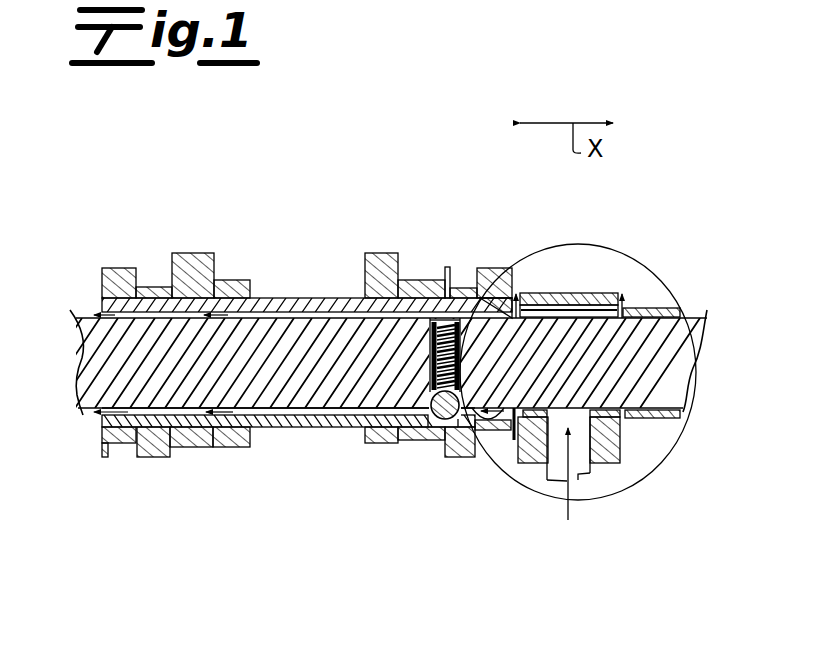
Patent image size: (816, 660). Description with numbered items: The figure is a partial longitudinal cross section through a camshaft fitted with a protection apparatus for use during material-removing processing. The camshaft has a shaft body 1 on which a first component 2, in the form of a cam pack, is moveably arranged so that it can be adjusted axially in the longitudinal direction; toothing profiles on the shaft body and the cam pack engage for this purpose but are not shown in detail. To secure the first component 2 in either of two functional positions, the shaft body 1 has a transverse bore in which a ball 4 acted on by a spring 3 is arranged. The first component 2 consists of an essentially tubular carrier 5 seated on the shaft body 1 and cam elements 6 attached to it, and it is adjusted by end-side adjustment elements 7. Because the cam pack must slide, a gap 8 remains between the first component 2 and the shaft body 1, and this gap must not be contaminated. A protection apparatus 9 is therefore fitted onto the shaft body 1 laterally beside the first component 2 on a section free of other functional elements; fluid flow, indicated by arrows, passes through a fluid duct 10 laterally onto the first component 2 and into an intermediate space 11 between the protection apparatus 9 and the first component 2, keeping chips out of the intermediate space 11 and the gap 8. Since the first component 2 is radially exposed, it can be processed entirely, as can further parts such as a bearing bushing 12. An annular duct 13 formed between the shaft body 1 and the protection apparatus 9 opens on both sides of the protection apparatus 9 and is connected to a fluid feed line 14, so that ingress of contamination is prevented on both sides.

The shaft body 1 is at (297, 400).
The first component 2 is at (294, 281).
The spring 3 is at (424, 378).
The ball 4 is at (433, 416).
The tubular carrier 5 is at (331, 427).
The cam elements 6 is at (182, 254).
The adjustment elements 7 is at (104, 268).
The gap 8 is at (160, 415).
The protection apparatus 9 is at (589, 278).
The fluid duct 10 is at (535, 463).
The intermediate space 11 is at (531, 293).
The bearing bushing 12 is at (672, 418).
The annular duct 13 is at (595, 303).
The fluid feed line 14 is at (583, 472).